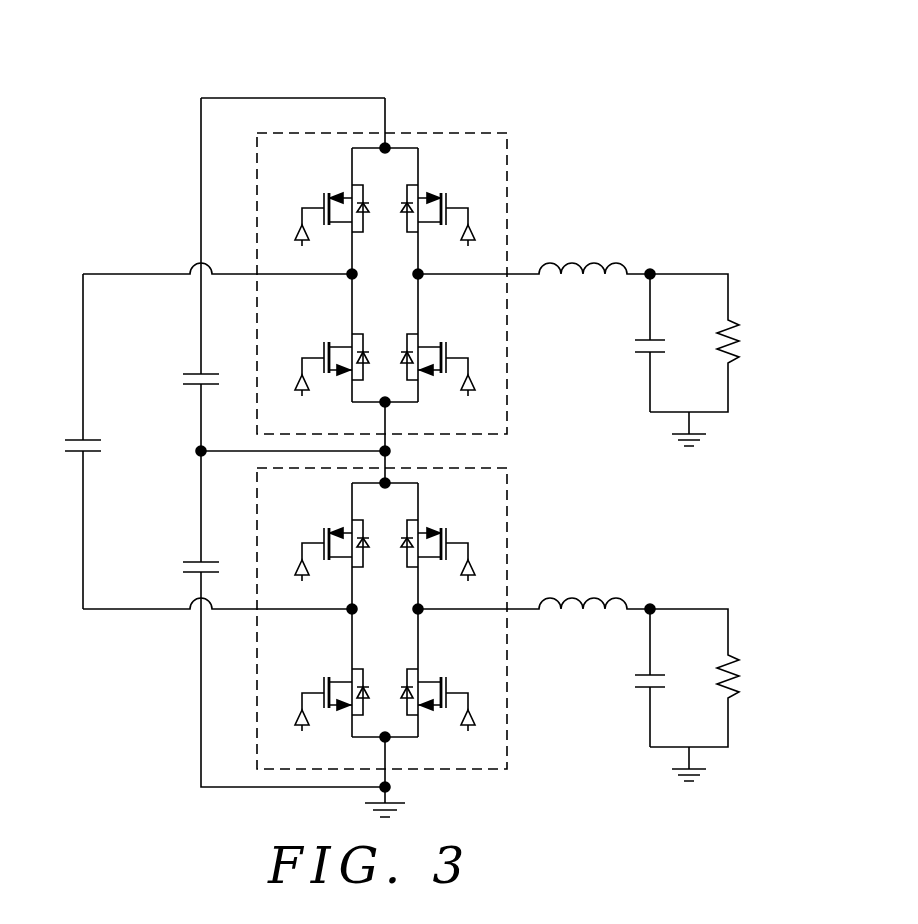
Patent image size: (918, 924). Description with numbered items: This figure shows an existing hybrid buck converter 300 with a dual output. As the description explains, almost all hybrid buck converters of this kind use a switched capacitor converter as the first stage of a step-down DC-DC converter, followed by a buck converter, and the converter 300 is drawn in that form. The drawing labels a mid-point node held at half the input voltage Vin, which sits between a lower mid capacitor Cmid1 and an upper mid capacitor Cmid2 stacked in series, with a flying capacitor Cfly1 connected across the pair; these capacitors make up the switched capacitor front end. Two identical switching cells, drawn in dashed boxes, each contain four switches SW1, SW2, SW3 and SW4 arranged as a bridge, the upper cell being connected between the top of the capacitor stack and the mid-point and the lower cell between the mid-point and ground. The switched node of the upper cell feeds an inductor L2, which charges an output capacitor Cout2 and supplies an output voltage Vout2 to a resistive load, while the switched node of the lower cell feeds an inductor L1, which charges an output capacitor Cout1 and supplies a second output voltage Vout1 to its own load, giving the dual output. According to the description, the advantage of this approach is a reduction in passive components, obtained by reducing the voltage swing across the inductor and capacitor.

The hybrid buck converter 300 is at (138, 50).
The switch SW1 is at (323, 377).
The switch SW2 is at (445, 377).
The switch SW3 is at (323, 523).
The switch SW4 is at (445, 523).
The inductor L1 is at (534, 589).
The inductor L2 is at (534, 254).
The output capacitor Cout1 is at (621, 675).
The output capacitor Cout2 is at (621, 340).
The mid capacitor Cmid1 is at (167, 551).
The mid capacitor Cmid2 is at (167, 364).
The flying capacitor Cfly1 is at (52, 427).
The output voltage node Vout1 with load Vout1 is at (694, 679).
The output voltage node Vout2 with load Vout2 is at (694, 344).
The input voltage midpoint Vin/2 Vin is at (252, 442).